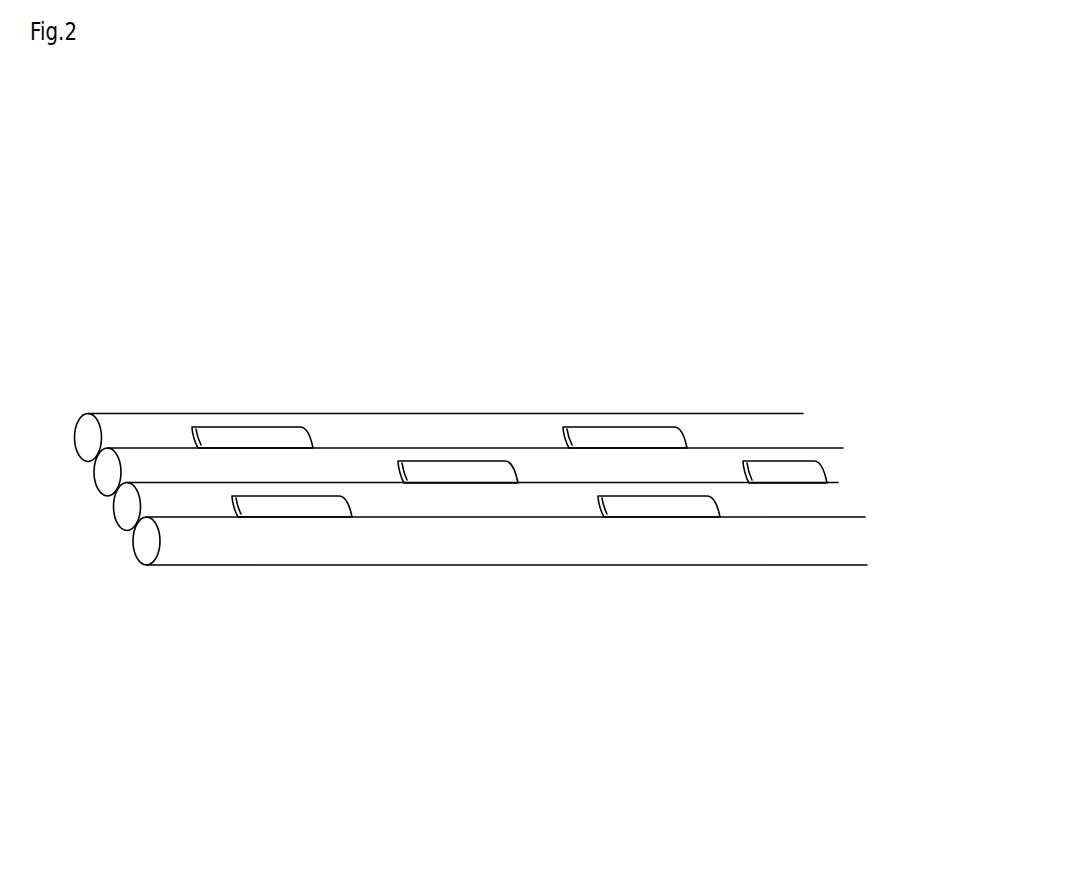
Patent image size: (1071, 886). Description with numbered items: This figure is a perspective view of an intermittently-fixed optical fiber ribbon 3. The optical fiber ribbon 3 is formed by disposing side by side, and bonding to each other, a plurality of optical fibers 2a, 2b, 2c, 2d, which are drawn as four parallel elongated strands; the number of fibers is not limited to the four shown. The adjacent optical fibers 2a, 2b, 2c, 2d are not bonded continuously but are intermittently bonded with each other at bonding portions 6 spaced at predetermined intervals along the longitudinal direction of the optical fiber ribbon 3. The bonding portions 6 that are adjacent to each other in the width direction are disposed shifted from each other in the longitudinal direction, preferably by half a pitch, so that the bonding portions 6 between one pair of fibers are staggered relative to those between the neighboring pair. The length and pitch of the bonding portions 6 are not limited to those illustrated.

The optical fiber ribbon 3 is at (625, 230).
The optical fiber 2a is at (333, 427).
The optical fiber 2b is at (425, 453).
The optical fiber 2c is at (530, 500).
The optical fiber 2d is at (447, 547).
The bonding portion 6 is at (302, 503).